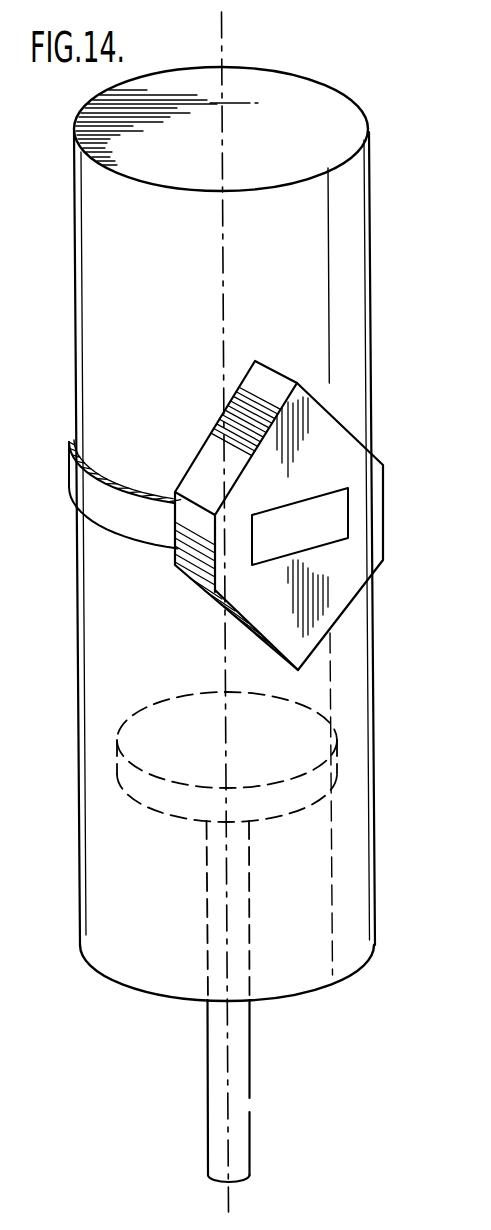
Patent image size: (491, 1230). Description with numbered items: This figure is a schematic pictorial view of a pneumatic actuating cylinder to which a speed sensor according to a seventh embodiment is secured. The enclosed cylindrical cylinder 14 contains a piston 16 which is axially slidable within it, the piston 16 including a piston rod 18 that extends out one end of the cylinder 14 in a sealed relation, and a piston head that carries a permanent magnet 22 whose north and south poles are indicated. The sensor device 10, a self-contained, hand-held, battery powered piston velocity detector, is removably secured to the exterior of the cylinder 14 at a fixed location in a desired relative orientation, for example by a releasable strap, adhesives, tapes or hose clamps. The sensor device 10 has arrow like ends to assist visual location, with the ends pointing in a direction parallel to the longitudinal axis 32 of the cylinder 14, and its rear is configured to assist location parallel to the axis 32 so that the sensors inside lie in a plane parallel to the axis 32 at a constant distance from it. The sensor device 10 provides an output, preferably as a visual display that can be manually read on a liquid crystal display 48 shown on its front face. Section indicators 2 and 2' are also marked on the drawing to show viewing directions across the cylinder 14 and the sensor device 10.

The axis 32 is at (222, 28).
The cylinder 14 is at (358, 195).
The sensor device 10 is at (322, 418).
The liquid crystal display 48 is at (315, 537).
The permanent magnet 22 is at (330, 713).
The piston 16 is at (256, 922).
The piston rod 18 is at (249, 1082).
The section line 2 is at (70, 596).
The section line 2' is at (453, 486).